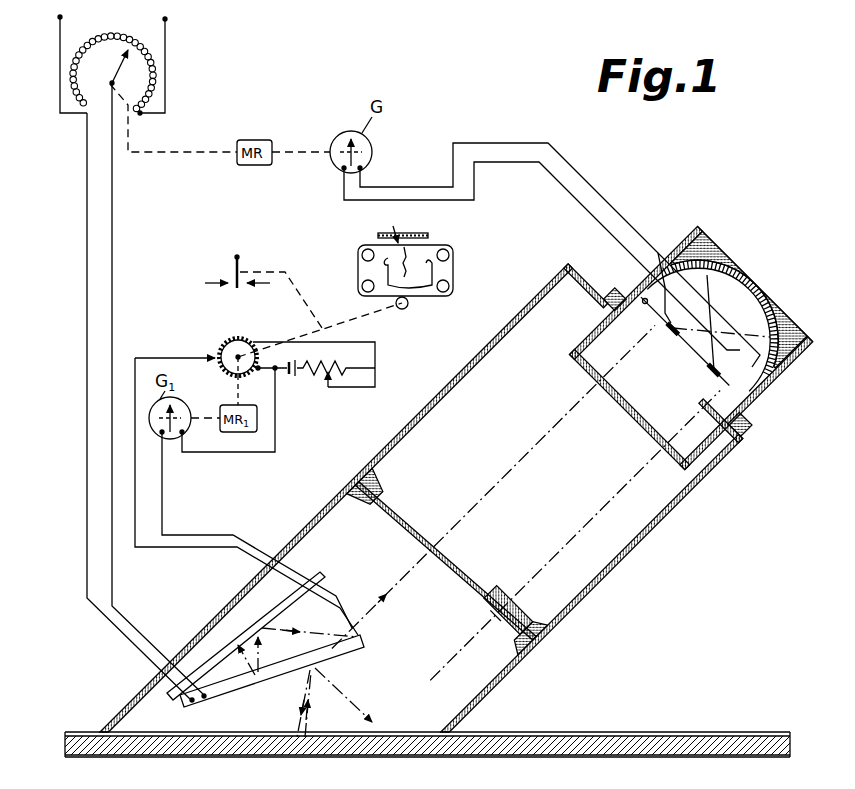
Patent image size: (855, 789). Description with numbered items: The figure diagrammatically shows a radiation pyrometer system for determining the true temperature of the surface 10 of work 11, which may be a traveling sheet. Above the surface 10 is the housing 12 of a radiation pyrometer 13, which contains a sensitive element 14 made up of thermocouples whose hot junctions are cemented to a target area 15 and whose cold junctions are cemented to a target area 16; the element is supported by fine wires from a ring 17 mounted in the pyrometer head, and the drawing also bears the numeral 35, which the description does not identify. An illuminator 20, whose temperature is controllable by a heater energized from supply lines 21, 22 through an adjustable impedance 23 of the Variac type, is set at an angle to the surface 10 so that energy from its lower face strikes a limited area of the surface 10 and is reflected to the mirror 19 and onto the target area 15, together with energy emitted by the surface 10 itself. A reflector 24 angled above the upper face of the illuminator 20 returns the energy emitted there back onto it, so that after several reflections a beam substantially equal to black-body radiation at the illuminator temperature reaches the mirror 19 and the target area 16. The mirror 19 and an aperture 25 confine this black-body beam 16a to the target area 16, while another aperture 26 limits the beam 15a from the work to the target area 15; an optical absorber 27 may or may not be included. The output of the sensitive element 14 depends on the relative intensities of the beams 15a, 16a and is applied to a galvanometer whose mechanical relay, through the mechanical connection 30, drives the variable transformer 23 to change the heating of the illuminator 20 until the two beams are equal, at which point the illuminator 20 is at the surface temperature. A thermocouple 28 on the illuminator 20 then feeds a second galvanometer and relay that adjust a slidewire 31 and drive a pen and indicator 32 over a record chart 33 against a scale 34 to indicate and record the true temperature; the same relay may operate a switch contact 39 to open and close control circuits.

The surface 10 is at (582, 737).
The work 11 is at (680, 738).
The housing 12 is at (562, 636).
The radiation pyrometer 13 is at (670, 579).
The sensitive element 14 is at (688, 357).
The target area 15 is at (671, 333).
The target area 16 is at (711, 369).
The ring 17 is at (641, 300).
The mirror 19 is at (712, 268).
The illuminator 20 is at (336, 657).
The supply line 21 is at (58, 58).
The supply line 22 is at (166, 55).
The adjustable impedance 23 is at (158, 80).
The reflector 24 is at (318, 581).
The aperture 25 is at (432, 540).
The aperture 26 is at (494, 618).
The optical absorber 27 is at (508, 612).
The thermocouple 28 is at (345, 641).
The mechanical connection 30 is at (194, 156).
The slidewire 31 is at (228, 340).
The pen and indicator 32 is at (382, 225).
The record chart 33 is at (437, 272).
The scale 34 is at (428, 234).
The detector housing 35 is at (642, 425).
The switch contact 39 is at (233, 269).
The beam 15a is at (585, 526).
The beam 16a is at (518, 466).